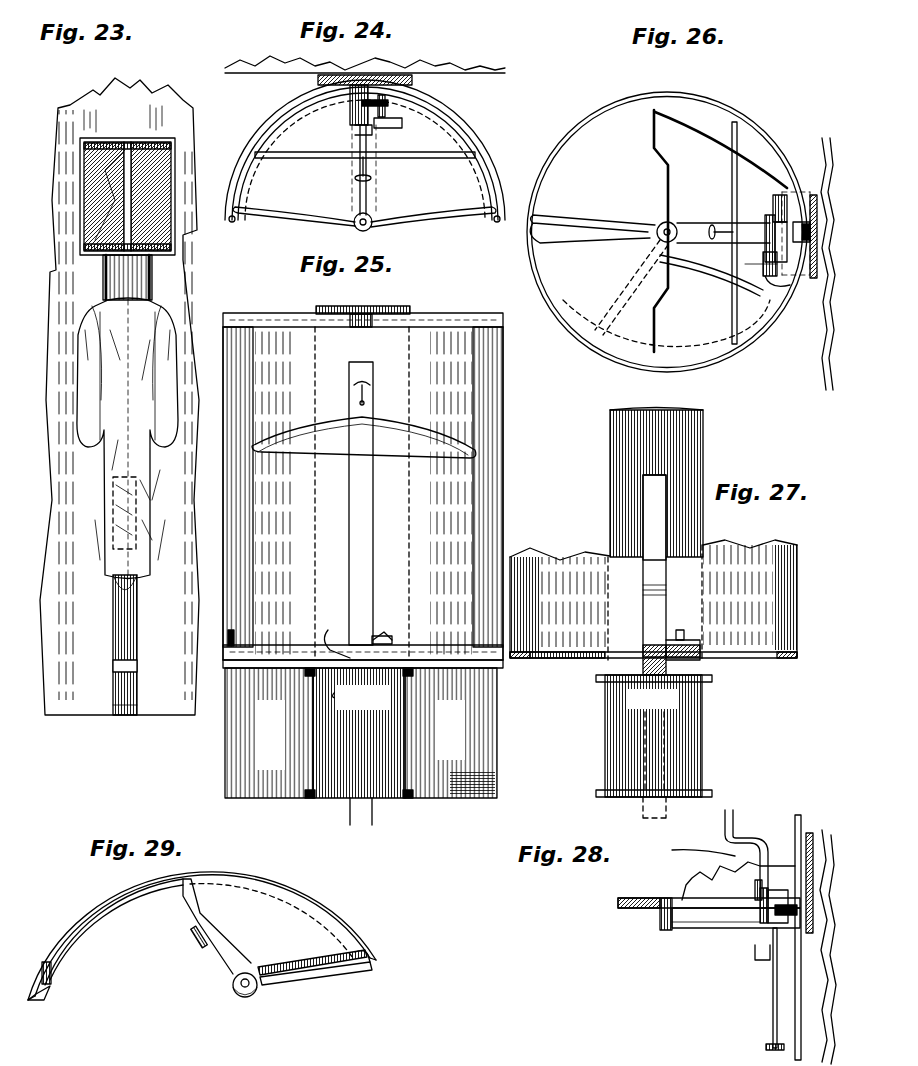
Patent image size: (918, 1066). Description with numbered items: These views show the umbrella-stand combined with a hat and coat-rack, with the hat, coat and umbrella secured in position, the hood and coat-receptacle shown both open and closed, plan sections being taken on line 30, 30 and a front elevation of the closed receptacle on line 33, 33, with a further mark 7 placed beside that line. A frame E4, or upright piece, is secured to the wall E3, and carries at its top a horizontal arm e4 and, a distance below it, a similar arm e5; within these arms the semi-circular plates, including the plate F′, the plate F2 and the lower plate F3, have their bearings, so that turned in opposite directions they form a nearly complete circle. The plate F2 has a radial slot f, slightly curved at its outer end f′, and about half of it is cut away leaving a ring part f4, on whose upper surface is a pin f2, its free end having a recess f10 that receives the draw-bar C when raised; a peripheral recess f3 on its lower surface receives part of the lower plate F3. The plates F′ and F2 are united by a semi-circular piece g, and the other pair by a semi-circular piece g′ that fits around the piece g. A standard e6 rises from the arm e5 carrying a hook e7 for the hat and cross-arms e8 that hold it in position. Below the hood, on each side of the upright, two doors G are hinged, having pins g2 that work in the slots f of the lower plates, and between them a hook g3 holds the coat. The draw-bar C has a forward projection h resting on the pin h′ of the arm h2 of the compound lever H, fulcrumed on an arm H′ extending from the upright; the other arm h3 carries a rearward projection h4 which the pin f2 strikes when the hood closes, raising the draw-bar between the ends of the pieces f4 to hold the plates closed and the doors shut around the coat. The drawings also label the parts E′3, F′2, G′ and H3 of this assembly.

In FIG. 23, the wall E3 is at (127, 183).
In FIG. 24, the wall E3 is at (497, 75).
In FIG. 28, the wall E3 is at (809, 833).
In FIG. 24, the frame E4 is at (320, 80).
In FIG. 25, the frame E4 is at (338, 784).
In FIG. 26, the frame E4 is at (822, 118).
In FIG. 27, the frame E4 is at (703, 442).
In FIG. 28, the frame E4 is at (790, 940).
In FIG. 25, the casing plate E′3 is at (290, 660).
In FIG. 25, the plate F′ is at (258, 316).
In FIG. 24, the plate F2 is at (405, 188).
In FIG. 28, the plate F2 is at (612, 904).
In FIG. 24, the lower plate F3 is at (332, 190).
In FIG. 25, the frame segment F′2 is at (480, 622).
In FIG. 29, the frame segment F′2 is at (330, 922).
In FIG. 23, the doors G is at (108, 283).
In FIG. 24, the doors G is at (340, 144).
In FIG. 26, the doors G is at (693, 290).
In FIG. 25, the frame member G′ is at (361, 733).
In FIG. 26, the frame member G′ is at (703, 185).
In FIG. 23, the compound lever H is at (136, 636).
In FIG. 24, the compound lever H is at (402, 123).
In FIG. 25, the compound lever H is at (392, 640).
In FIG. 26, the compound lever H is at (800, 245).
In FIG. 27, the compound lever H is at (700, 662).
In FIG. 28, the compound lever H is at (785, 918).
In FIG. 24, the arm H′ is at (372, 130).
In FIG. 25, the arm H′ is at (380, 640).
In FIG. 27, the arm H′ is at (700, 645).
In FIG. 28, the arm H′ is at (762, 900).
In FIG. 23, the rod band H3 is at (114, 672).
In FIG. 23, the draw-bar C is at (122, 446).
In FIG. 24, the draw-bar C is at (330, 70).
In FIG. 25, the draw-bar C is at (364, 822).
In FIG. 26, the draw-bar C is at (822, 300).
In FIG. 27, the draw-bar C is at (645, 815).
In FIG. 28, the draw-bar C is at (805, 1058).
In FIG. 25, the arm e4 is at (362, 308).
In FIG. 24, the arm e5 is at (362, 125).
In FIG. 25, the arm e5 is at (340, 684).
In FIG. 27, the arm e5 is at (678, 690).
In FIG. 28, the arm e5 is at (658, 928).
In FIG. 24, the standard e6 is at (380, 128).
In FIG. 25, the standard e6 is at (361, 503).
In FIG. 27, the standard e6 is at (654, 566).
In FIG. 28, the standard e6 is at (725, 838).
In FIG. 24, the hook e7 is at (372, 177).
In FIG. 25, the hook e7 is at (372, 396).
In FIG. 26, the hook e7 is at (712, 225).
In FIG. 25, the cross-arms e8 is at (290, 430).
In FIG. 26, the cross-arms e8 is at (731, 312).
In FIG. 24, the radial slot f is at (408, 216).
In FIG. 26, the radial slot f is at (580, 215).
In FIG. 29, the radial slot f is at (300, 962).
In FIG. 24, the curved end of slot f′ is at (435, 208).
In FIG. 29, the curved end of slot f′ is at (360, 946).
In FIG. 24, the pin f2 is at (236, 205).
In FIG. 25, the pin f2 is at (238, 630).
In FIG. 26, the pin f2 is at (790, 366).
In FIG. 27, the pin f2 is at (688, 633).
In FIG. 28, the pin f2 is at (688, 866).
In FIG. 29, the pin f2 is at (74, 975).
In FIG. 24, the peripheral recess f3 is at (300, 212).
In FIG. 25, the peripheral recess f3 is at (236, 352).
In FIG. 26, the peripheral recess f3 is at (515, 330).
In FIG. 29, the peripheral recess f3 is at (372, 972).
In FIG. 24, the ring part f4 is at (262, 118).
In FIG. 26, the ring part f4 is at (780, 330).
In FIG. 27, the ring part f4 is at (785, 660).
In FIG. 28, the ring part f4 is at (768, 940).
In FIG. 29, the ring part f4 is at (92, 906).
In FIG. 29, the recess f10 is at (46, 985).
In FIG. 24, the semi-circular piece g is at (240, 158).
In FIG. 25, the semi-circular piece g is at (445, 515).
In FIG. 26, the semi-circular piece g is at (615, 356).
In FIG. 27, the semi-circular piece g is at (797, 612).
In FIG. 28, the semi-circular piece g is at (738, 881).
In FIG. 23, the semi-circular piece g′ is at (218, 540).
In FIG. 24, the semi-circular piece g′ is at (478, 140).
In FIG. 25, the semi-circular piece g′ is at (505, 446).
In FIG. 26, the semi-circular piece g′ is at (605, 110).
In FIG. 27, the semi-circular piece g′ is at (505, 450).
In FIG. 28, the semi-circular piece g′ is at (795, 822).
In FIG. 23, the pins g2 is at (222, 660).
In FIG. 24, the pins g2 is at (236, 226).
In FIG. 25, the pins g2 is at (505, 666).
In FIG. 26, the pins g2 is at (660, 222).
In FIG. 27, the pins g2 is at (529, 678).
In FIG. 25, the hook g3 is at (385, 710).
In FIG. 27, the hook g3 is at (632, 708).
In FIG. 28, the hook g3 is at (760, 955).
In FIG. 26, the forward projection h is at (784, 200).
In FIG. 27, the forward projection h is at (645, 640).
In FIG. 28, the forward projection h is at (701, 851).
In FIG. 24, the pin h′ is at (380, 77).
In FIG. 25, the pin h′ is at (336, 602).
In FIG. 26, the pin h′ is at (762, 258).
In FIG. 27, the pin h′ is at (600, 668).
In FIG. 28, the pin h′ is at (770, 930).
In FIG. 24, the arm h2 is at (362, 120).
In FIG. 26, the arm h2 is at (768, 222).
In FIG. 27, the arm h2 is at (740, 690).
In FIG. 24, the arm h3 is at (392, 105).
In FIG. 26, the arm h3 is at (770, 278).
In FIG. 27, the arm h3 is at (690, 634).
In FIG. 24, the rearward projection h4 is at (370, 100).
In FIG. 26, the rearward projection h4 is at (800, 268).
In FIG. 28, the rearward projection h4 is at (758, 880).
In FIG. 23, the section line 30 is at (214, 335).
In FIG. 25, the section line 30 is at (531, 340).
In FIG. 26, the section line 30 is at (531, 347).
In FIG. 26, the section line 33 is at (680, 58).
In FIG. 26, the section line 7 is at (685, 387).